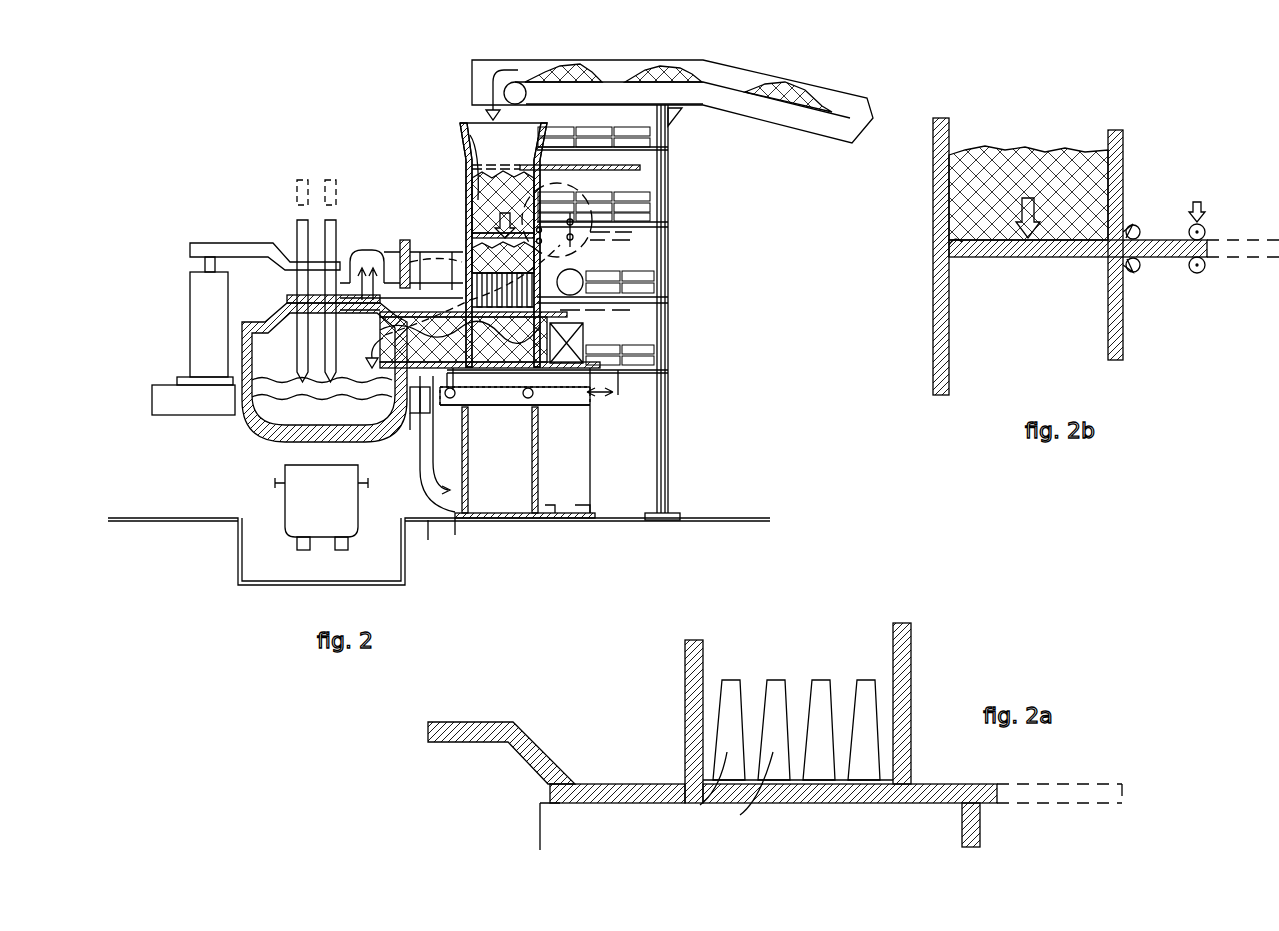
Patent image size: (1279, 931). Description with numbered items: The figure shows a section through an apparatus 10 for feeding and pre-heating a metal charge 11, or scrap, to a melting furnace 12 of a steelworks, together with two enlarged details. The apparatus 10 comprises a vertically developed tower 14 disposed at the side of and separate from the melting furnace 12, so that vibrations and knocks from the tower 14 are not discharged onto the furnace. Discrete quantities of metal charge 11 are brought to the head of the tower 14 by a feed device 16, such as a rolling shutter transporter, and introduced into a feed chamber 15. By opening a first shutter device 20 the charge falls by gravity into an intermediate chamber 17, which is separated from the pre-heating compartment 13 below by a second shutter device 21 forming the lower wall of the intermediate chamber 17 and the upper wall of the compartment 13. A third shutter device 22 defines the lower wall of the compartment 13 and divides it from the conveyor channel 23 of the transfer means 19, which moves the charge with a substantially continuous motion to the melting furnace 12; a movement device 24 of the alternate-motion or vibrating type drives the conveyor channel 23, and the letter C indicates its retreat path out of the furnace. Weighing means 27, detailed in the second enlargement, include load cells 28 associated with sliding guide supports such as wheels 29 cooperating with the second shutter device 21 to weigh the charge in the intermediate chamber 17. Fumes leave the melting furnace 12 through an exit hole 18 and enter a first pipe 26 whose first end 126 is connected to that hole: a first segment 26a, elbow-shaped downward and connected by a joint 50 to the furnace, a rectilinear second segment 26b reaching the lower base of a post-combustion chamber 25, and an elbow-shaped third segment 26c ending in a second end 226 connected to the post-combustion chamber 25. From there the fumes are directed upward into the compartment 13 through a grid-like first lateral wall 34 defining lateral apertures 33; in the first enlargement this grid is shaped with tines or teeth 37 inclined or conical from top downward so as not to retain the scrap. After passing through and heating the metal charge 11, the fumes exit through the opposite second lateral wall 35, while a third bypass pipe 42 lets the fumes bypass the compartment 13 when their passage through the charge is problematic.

In FIG. 2, the apparatus 10 is at (305, 94).
In FIG. 2, the metal charge 11 is at (567, 70).
In FIG. 2B, the metal charge 11 is at (962, 206).
In FIG. 2, the melting furnace 12 is at (255, 445).
In FIG. 2, the pre-heating compartment 13 is at (462, 262).
In FIG. 2, the tower 14 is at (456, 124).
In FIG. 2, the feed chamber 15 is at (475, 165).
In FIG. 2, the feed device 16 is at (680, 90).
In FIG. 2, the intermediate chamber 17 is at (468, 235).
In FIG. 2B, the intermediate chamber 17 is at (958, 238).
In FIG. 2, the exit hole 18 is at (372, 280).
In FIG. 2, the transfer means 19 is at (545, 380).
In FIG. 2, the first shutter device 20 is at (640, 160).
In FIG. 2, the second shutter device 21 is at (580, 236).
In FIG. 2B, the second shutter device 21 is at (1000, 250).
In FIG. 2, the third shutter device 22 is at (560, 318).
In FIG. 2A, the third shutter device 22 is at (845, 795).
In FIG. 2, the conveyor channel 23 is at (508, 368).
In FIG. 2, the movement device 24 is at (640, 353).
In FIG. 2, the post-combustion chamber 25 is at (545, 468).
In FIG. 2, the first pipe 26 is at (420, 467).
In FIG. 2, the first segment 26a is at (407, 240).
In FIG. 2, the second segment 26b is at (433, 437).
In FIG. 2, the third segment 26c is at (432, 518).
In FIG. 2, the second end 226 is at (462, 520).
In FIG. 2B, the weighing means 27 is at (1192, 155).
In FIG. 2B, the load cells 28 is at (1138, 228).
In FIG. 2B, the wheels 29 is at (1200, 226).
In FIG. 2, the lateral apertures 33 is at (440, 282).
In FIG. 2A, the lateral apertures 33 is at (770, 760).
In FIG. 2, the first lateral wall 34 is at (452, 258).
In FIG. 2A, the first lateral wall 34 is at (818, 628).
In FIG. 2, the second lateral wall 35 is at (536, 240).
In FIG. 2A, the tines or teeth 37 is at (748, 715).
In FIG. 2, the third bypass pipe 42 is at (590, 288).
In FIG. 2, the joint 50 is at (385, 250).
In FIG. 2, the first end 126 is at (368, 250).